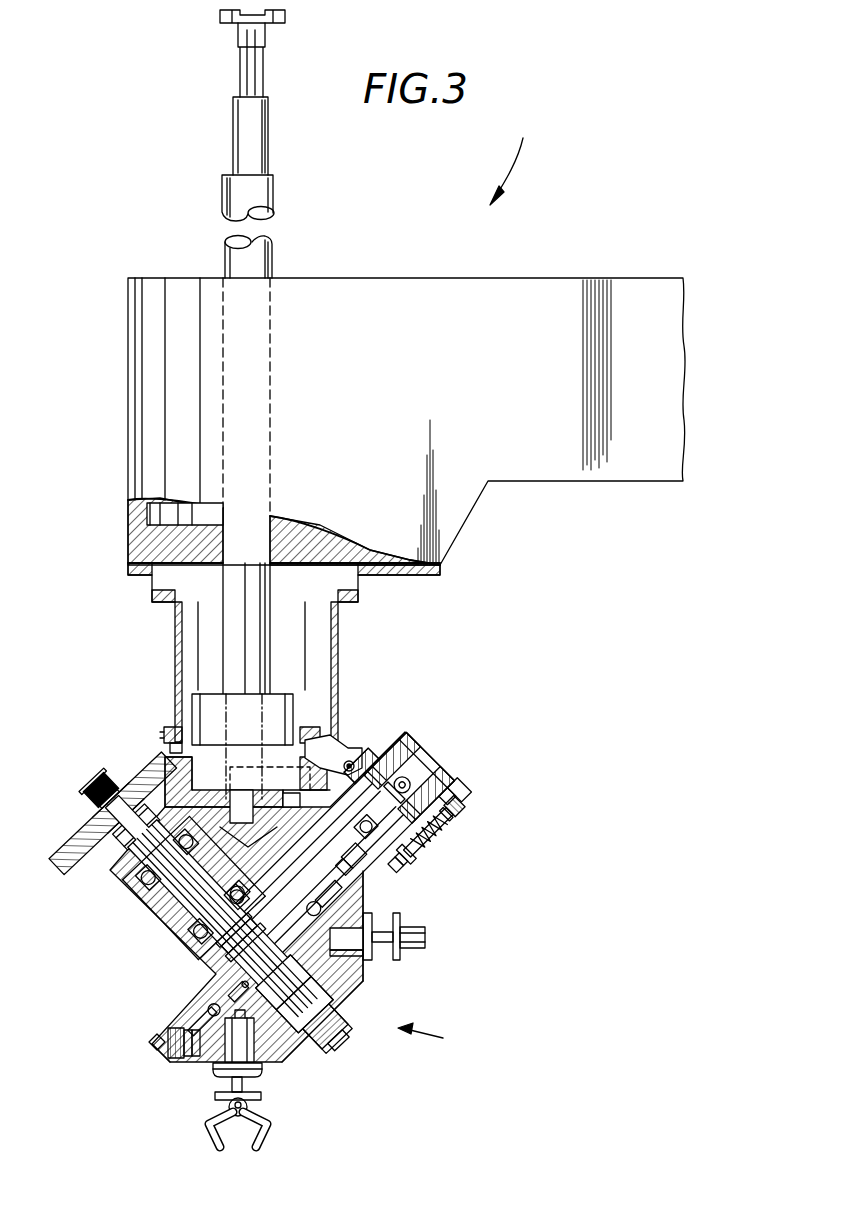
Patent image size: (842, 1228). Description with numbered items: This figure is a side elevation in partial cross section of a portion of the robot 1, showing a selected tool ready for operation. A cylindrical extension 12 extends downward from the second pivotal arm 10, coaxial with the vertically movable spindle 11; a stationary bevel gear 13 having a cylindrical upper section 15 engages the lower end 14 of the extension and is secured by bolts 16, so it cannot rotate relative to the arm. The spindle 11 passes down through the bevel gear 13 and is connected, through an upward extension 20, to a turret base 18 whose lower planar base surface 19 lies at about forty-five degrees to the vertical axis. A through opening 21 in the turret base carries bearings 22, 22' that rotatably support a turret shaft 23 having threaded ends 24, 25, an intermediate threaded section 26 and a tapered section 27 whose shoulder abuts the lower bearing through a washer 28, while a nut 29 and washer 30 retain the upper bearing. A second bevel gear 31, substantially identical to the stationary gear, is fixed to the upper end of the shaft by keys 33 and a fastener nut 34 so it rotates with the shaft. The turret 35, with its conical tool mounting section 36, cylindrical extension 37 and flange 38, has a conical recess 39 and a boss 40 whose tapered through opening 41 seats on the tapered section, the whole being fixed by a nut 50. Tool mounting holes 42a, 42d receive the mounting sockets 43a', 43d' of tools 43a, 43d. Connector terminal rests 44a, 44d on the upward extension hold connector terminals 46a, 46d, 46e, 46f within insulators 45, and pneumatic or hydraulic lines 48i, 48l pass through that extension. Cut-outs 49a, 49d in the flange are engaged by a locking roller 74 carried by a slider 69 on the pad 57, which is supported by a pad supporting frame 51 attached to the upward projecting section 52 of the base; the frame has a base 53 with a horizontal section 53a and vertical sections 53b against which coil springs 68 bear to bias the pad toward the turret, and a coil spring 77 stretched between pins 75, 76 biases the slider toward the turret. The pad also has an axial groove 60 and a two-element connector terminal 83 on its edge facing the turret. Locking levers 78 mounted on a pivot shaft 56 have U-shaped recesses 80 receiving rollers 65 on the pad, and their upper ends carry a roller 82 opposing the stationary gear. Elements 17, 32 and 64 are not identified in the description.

The machine tool unit 1 is at (511, 158).
The second pivotal arm 10 is at (566, 292).
The vertically movable spindle 11 is at (262, 197).
The cylindrical extension 12 is at (296, 653).
The bevel gear 13 is at (325, 762).
The lower end 14 is at (318, 748).
The cylindrical upper section 15 is at (170, 746).
The bolts 16 is at (168, 733).
The tool head 17 is at (433, 1037).
The turret base 18 is at (192, 800).
The lower planar base surface 19 is at (248, 818).
The upward extension 20 is at (192, 787).
The through opening 21 is at (167, 928).
The bearing 22 is at (150, 878).
The bearing 22' is at (179, 945).
The turret shaft 23 is at (170, 912).
The threaded end 24 is at (104, 779).
The threaded end 25 is at (340, 1040).
The intermediate threaded section 26 is at (141, 842).
The tapered section 27 is at (228, 950).
The washer 28 is at (196, 955).
The nut 29 is at (135, 858).
The washer 30 is at (140, 873).
The bevel gear 31 is at (68, 855).
The washer 32 is at (110, 803).
The keys 33 is at (150, 780).
The fastener nut 34 is at (100, 792).
The turret 35 is at (296, 1060).
The conical tool mounting section 36 is at (302, 1043).
The cylindrical extension 37 is at (340, 995).
The flange 38 is at (150, 1048).
The conical recess 39 is at (350, 978).
The boss 40 is at (200, 962).
The tapered through opening 41 is at (234, 998).
The tool mounting hole 42a is at (262, 1068).
The tool mounting hole 42d is at (366, 962).
The tool 43a is at (219, 1123).
The mounting socket 43a' is at (222, 1054).
The tool 43d is at (427, 936).
The mounting socket 43d' is at (393, 949).
The connector terminal rest 44a is at (352, 902).
The connector terminal rest 44d is at (180, 1062).
The insulators 45 is at (372, 882).
The connector terminals 46a is at (365, 858).
The connector terminals 46d is at (180, 1052).
The connector terminals 46e is at (262, 1057).
The connector terminals 46f is at (243, 888).
The pneumatic or hydraulic line 48i is at (208, 1010).
The pneumatic or hydraulic line 48l is at (346, 939).
The cut-out 49a is at (290, 835).
The cut-out 49d is at (150, 1041).
The nut 50 is at (342, 1028).
The pad supporting frame 51 is at (398, 760).
The upward projecting section 52 is at (374, 750).
The base 53 is at (420, 762).
The horizontal section 53a is at (385, 752).
The vertical sections 53b is at (425, 775).
The pivot shaft 56 is at (351, 760).
The pad 57 is at (418, 854).
The axial groove 60 is at (442, 836).
The plate 64 is at (420, 800).
The rollers 65 is at (412, 790).
The coil springs 68 is at (455, 812).
The slider 69 is at (452, 798).
The locking roller 74 is at (358, 830).
The pin 75 is at (442, 862).
The pin 76 is at (462, 820).
The coil spring 77 is at (445, 846).
The locking levers 78 is at (296, 803).
The U-shaped recesses 80 is at (403, 768).
The roller 82 is at (282, 780).
The two-element connector terminal 83 is at (407, 862).